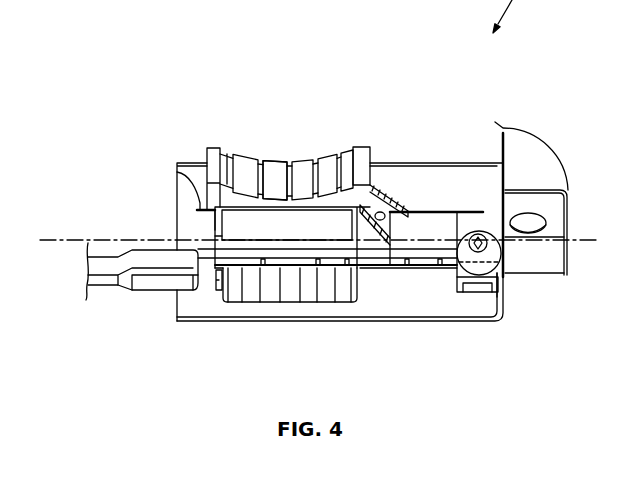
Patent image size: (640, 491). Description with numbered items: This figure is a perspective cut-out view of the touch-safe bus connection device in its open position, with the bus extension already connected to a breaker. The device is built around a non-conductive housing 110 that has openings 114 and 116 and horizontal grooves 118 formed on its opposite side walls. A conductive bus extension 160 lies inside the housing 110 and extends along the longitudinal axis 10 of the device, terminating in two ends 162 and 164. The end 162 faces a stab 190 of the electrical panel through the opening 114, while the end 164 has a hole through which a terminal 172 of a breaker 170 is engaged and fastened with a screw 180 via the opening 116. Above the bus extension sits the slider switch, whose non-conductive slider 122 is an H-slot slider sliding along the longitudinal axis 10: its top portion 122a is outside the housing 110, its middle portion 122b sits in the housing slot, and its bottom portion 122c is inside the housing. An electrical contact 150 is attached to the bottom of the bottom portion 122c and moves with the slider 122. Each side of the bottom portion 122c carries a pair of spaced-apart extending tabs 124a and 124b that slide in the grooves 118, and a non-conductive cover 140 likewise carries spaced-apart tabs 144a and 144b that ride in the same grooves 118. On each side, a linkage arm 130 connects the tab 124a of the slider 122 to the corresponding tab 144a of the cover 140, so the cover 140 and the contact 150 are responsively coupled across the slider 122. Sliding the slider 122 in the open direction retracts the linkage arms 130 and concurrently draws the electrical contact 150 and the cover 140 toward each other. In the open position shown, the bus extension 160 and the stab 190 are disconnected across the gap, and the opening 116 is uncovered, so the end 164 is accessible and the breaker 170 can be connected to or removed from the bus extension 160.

The longitudinal axis 10 is at (594, 238).
The non-conductive housing 110 is at (413, 150).
The opening 114 is at (639, 84).
The opening 116 is at (497, 228).
The horizontal grooves 118 is at (177, 170).
The non-conductive slider 122 is at (207, 140).
The top portion 122a is at (275, 173).
The middle portion 122b is at (215, 231).
The bottom portion 122c is at (215, 238).
The extending tab 124a is at (346, 266).
The extending tab 124b is at (264, 266).
The linkage arm 130 is at (388, 202).
The non-conductive cover 140 is at (437, 222).
The extending tab 144a is at (408, 266).
The extending tab 144b is at (440, 266).
The electrical contact 150 is at (248, 293).
The conductive bus extension 160 is at (420, 280).
The end 162 is at (218, 289).
The end 164 is at (483, 293).
The breaker 170 is at (528, 130).
The terminal 172 is at (505, 290).
The screw 180 is at (492, 257).
The stab 190 is at (105, 283).